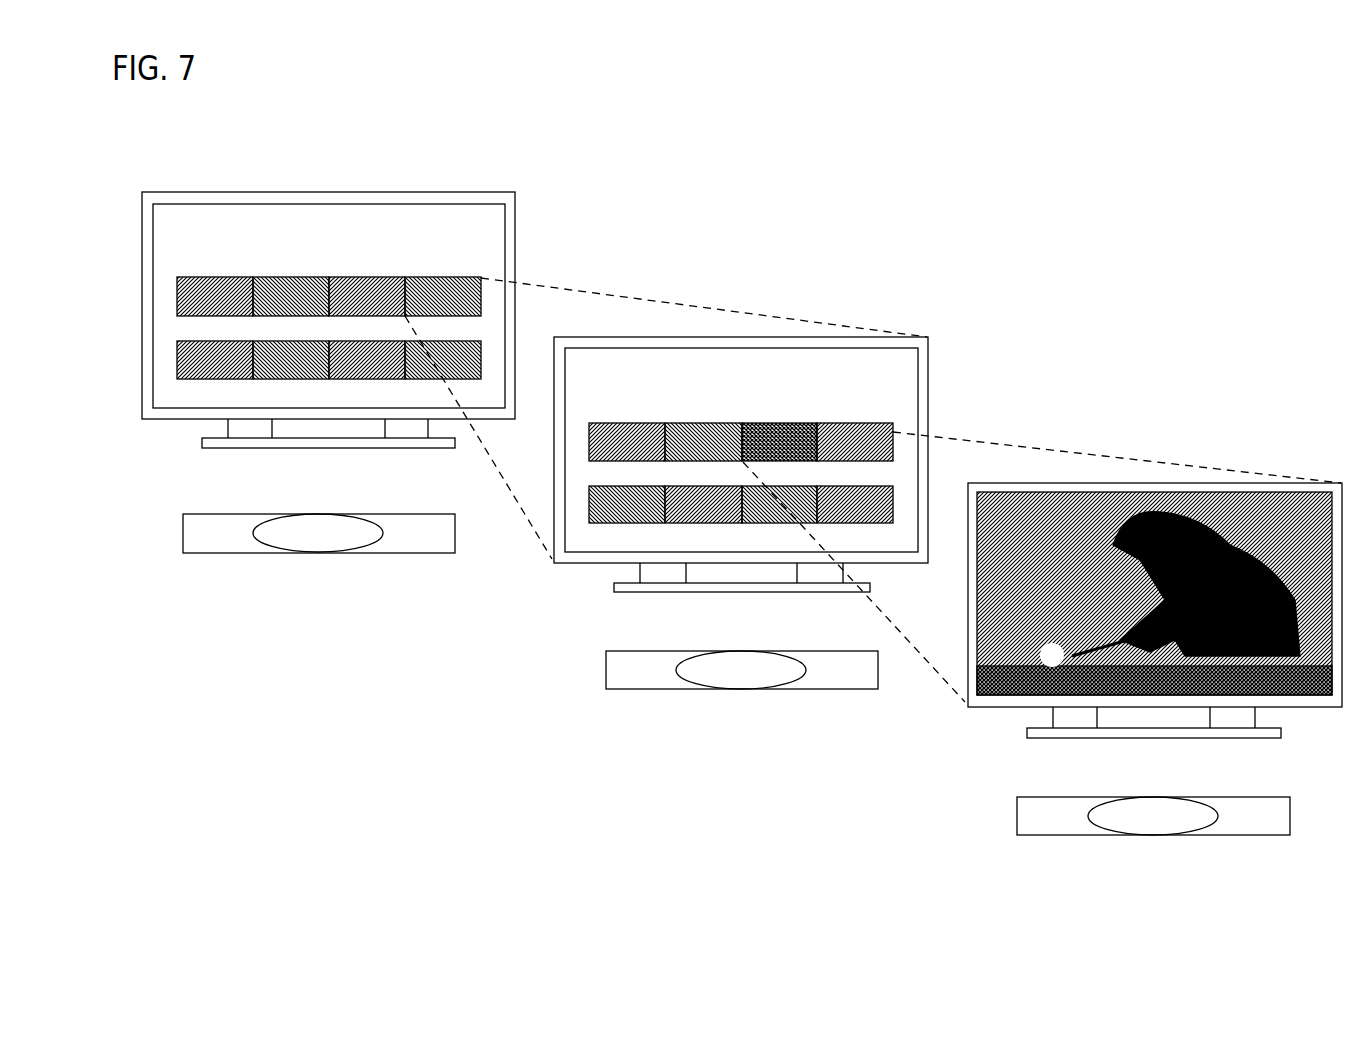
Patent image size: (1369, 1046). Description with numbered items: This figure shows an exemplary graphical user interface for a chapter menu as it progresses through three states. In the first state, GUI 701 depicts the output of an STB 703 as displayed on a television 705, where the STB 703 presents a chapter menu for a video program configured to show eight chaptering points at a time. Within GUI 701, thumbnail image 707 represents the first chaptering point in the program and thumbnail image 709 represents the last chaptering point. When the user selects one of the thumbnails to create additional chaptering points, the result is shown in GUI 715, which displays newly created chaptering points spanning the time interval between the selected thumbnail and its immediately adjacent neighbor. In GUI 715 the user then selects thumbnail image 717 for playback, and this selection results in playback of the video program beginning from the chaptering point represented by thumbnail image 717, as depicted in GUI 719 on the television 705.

The graphical user interface 701 is at (515, 175).
The STB 703 is at (183, 535).
The television 705 is at (142, 304).
The thumbnail image 707 is at (211, 278).
The thumbnail image 709 is at (425, 379).
The graphical user interface 715 is at (554, 275).
The thumbnail image 717 is at (785, 423).
The graphical user interface 719 is at (968, 425).